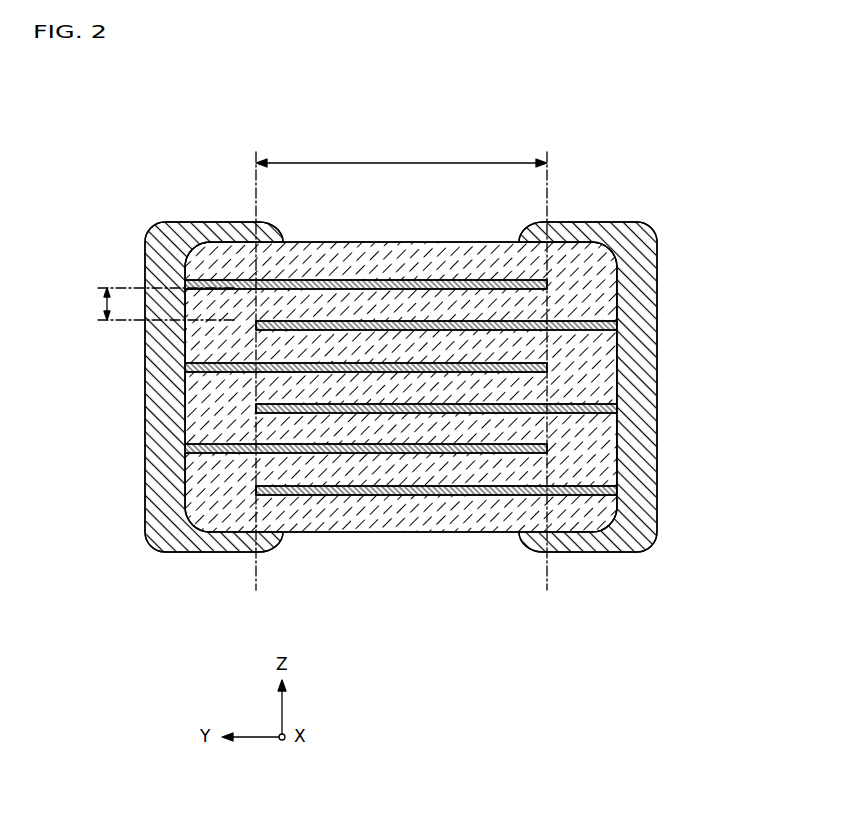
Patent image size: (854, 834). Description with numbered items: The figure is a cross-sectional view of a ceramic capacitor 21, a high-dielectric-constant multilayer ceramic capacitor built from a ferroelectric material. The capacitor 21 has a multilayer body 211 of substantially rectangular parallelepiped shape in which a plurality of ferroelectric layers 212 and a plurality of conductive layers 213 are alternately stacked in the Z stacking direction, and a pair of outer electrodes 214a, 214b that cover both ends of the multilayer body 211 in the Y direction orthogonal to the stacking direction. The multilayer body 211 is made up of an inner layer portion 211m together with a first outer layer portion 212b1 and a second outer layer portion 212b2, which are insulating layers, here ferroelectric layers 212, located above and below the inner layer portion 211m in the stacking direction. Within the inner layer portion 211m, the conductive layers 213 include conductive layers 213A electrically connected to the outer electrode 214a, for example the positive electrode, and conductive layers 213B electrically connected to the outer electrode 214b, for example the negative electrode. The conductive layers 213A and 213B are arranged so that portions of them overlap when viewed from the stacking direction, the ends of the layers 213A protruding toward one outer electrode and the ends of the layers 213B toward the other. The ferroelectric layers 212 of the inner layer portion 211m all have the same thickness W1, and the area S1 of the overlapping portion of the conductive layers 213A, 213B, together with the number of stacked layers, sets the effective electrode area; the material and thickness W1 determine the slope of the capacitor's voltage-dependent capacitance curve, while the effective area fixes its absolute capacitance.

The ceramic capacitor 21 is at (195, 200).
The multilayer body 211 is at (510, 203).
The ferroelectric layers 212 is at (358, 241).
The conductive layers 213 is at (213, 378).
The conductive layers 213A is at (447, 280).
The conductive layers 213B is at (585, 328).
The outer electrode 214a is at (145, 235).
The outer electrode 214b is at (633, 223).
The first outer layer portion 212b1 is at (617, 280).
The second outer layer portion 212b2 is at (617, 493).
The inner layer portion 211m is at (700, 280).
The area S1 is at (401, 360).
The thickness W1 is at (155, 304).